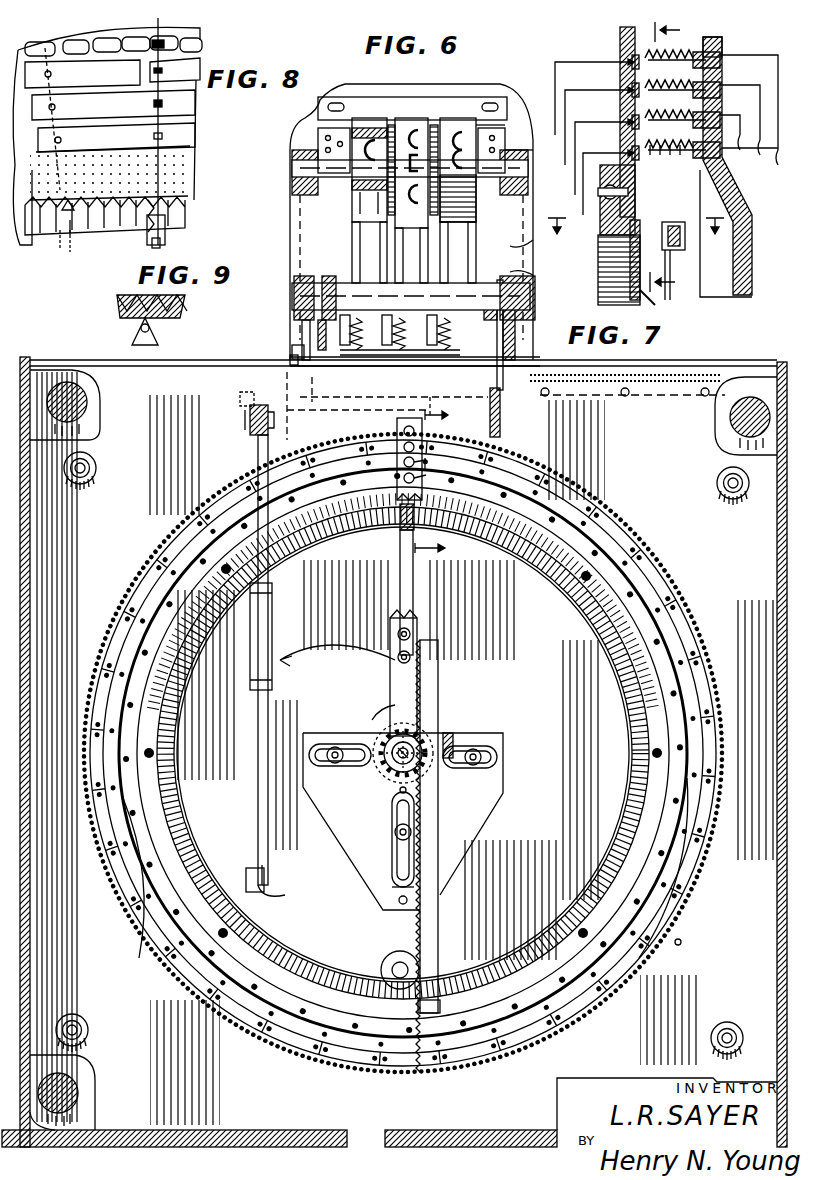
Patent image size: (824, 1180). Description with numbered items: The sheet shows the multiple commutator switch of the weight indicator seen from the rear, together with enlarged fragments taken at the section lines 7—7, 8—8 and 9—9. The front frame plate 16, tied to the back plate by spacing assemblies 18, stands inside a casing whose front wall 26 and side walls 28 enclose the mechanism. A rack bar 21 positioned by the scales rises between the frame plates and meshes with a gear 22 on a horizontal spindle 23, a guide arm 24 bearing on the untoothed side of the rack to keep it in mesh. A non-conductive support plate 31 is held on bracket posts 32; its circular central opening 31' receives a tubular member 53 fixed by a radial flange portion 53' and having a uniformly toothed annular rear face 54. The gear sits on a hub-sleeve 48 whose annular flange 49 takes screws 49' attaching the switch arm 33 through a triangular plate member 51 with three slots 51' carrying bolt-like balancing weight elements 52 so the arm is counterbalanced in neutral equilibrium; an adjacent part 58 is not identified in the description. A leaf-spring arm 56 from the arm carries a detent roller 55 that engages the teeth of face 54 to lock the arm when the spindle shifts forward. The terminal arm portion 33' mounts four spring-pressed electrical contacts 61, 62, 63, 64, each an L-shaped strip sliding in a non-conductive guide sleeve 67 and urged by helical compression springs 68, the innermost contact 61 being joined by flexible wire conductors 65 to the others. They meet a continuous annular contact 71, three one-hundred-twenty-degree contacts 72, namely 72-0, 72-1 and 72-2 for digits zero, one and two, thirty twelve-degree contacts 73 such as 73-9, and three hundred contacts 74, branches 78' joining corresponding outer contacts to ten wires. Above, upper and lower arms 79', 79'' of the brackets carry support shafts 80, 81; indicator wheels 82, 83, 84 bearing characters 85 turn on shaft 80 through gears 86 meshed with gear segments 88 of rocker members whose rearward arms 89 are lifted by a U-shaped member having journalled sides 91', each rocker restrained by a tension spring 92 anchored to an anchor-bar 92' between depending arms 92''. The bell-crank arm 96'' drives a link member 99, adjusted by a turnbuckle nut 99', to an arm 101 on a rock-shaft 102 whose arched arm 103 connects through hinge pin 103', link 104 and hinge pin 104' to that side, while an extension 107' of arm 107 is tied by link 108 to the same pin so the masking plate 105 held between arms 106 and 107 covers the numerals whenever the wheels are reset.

In FIG. 6, the front frame plate 16 is at (728, 395).
In FIG. 6, the spacing assemblies 18 is at (752, 405).
In FIG. 6, the rack bar 21 is at (438, 920).
In FIG. 6, the gear 22 is at (398, 776).
In FIG. 6, the spindle 23 is at (394, 766).
In FIG. 6, the guide arm 24 is at (462, 744).
In FIG. 6, the front wall 26 is at (92, 358).
In FIG. 6, the side walls 28 is at (30, 357).
In FIG. 6, the support plate 31 is at (403, 750).
In FIG. 7, the support plate 31 is at (612, 119).
In FIG. 8, the support plate 31 is at (118, 113).
In FIG. 6, the central opening 31' is at (403, 753).
In FIG. 8, the central opening 31' is at (127, 216).
In FIG. 6, the bracket posts 32 is at (718, 490).
In FIG. 6, the switch arm 33 is at (348, 673).
In FIG. 7, the switch arm 33 is at (741, 167).
In FIG. 7, the arm portion 33' is at (729, 37).
In FIG. 6, the hub-sleeve 48 is at (450, 738).
In FIG. 6, the annular flange 49 is at (384, 737).
In FIG. 6, the screws 49' is at (425, 727).
In FIG. 6, the plate member 51 is at (380, 847).
In FIG. 6, the slots 51' is at (425, 796).
In FIG. 6, the balancing weight elements 52 is at (330, 764).
In FIG. 6, the tubular member 53 is at (403, 604).
In FIG. 7, the tubular member 53 is at (598, 262).
In FIG. 8, the tubular member 53 is at (88, 233).
In FIG. 7, the radial flange portion 53' is at (591, 200).
In FIG. 8, the radial flange portion 53' is at (25, 215).
In FIG. 6, the toothed annular rear face 54 is at (186, 676).
In FIG. 7, the toothed annular rear face 54 is at (655, 305).
In FIG. 8, the toothed annular rear face 54 is at (186, 222).
In FIG. 6, the detent roller 55 is at (415, 518).
In FIG. 7, the detent roller 55 is at (678, 224).
In FIG. 8, the detent roller 55 is at (166, 240).
In FIG. 6, the leaf-spring arm 56 is at (414, 576).
In FIG. 7, the leaf-spring arm 56 is at (672, 300).
In FIG. 6, the arc 58 is at (388, 712).
In FIG. 6, the spring-pressed electrical contact 61 is at (406, 480).
In FIG. 7, the spring-pressed electrical contact 61 is at (650, 156).
In FIG. 8, the spring-pressed electrical contact 61 is at (165, 136).
In FIG. 6, the spring-pressed electrical contact 62 is at (404, 465).
In FIG. 7, the spring-pressed electrical contact 62 is at (656, 122).
In FIG. 8, the spring-pressed electrical contact 62 is at (165, 104).
In FIG. 7, the spring-pressed electrical contact 63 is at (656, 92).
In FIG. 8, the spring-pressed electrical contact 63 is at (165, 70).
In FIG. 6, the spring-pressed electrical contact 64 is at (400, 428).
In FIG. 7, the spring-pressed electrical contact 64 is at (656, 62).
In FIG. 8, the spring-pressed electrical contact 64 is at (160, 20).
In FIG. 6, the flexible wire conductors 65 is at (402, 436).
In FIG. 7, the flexible wire conductors 65 is at (778, 55).
In FIG. 7, the guide sleeve 67 is at (722, 70).
In FIG. 7, the helical compression springs 68 is at (682, 156).
In FIG. 6, the contact 71 is at (647, 617).
In FIG. 7, the contact 71 is at (624, 147).
In FIG. 8, the contact 71 is at (118, 140).
In FIG. 7, the contacts 72 is at (624, 116).
In FIG. 8, the contacts 72 is at (112, 108).
In FIG. 6, the ring strip segment 72-0 is at (165, 928).
In FIG. 6, the ring strip segment 72-1 is at (560, 500).
In FIG. 6, the ring strip segment 72-2 is at (688, 892).
In FIG. 7, the contacts 73 is at (624, 84).
In FIG. 8, the contacts 73 is at (106, 80).
In FIG. 6, the ring strip segment 73-9 is at (660, 578).
In FIG. 6, the contacts 74 is at (648, 546).
In FIG. 7, the contacts 74 is at (622, 56).
In FIG. 8, the contacts 74 is at (45, 48).
In FIG. 6, the branches 78' is at (695, 940).
In FIG. 6, the upper arms 79' is at (389, 171).
In FIG. 6, the lower arms 79'' is at (395, 288).
In FIG. 6, the support shaft 80 is at (292, 178).
In FIG. 6, the support shaft 81 is at (292, 297).
In FIG. 6, the indicator wheel 82 is at (360, 118).
In FIG. 6, the indicator wheel 83 is at (410, 118).
In FIG. 6, the indicator wheel 84 is at (462, 118).
In FIG. 6, the characters 85 is at (480, 122).
In FIG. 6, the gears 86 is at (392, 125).
In FIG. 6, the gear segments 88 is at (340, 248).
In FIG. 6, the arms 89 is at (389, 345).
In FIG. 6, the sides 91' is at (288, 333).
In FIG. 6, the tension spring 92 is at (400, 357).
In FIG. 6, the anchor-bar 92' is at (271, 353).
In FIG. 6, the arms 92'' is at (279, 342).
In FIG. 6, the arm 96'' is at (268, 909).
In FIG. 6, the link member 99 is at (238, 663).
In FIG. 6, the turnbuckle nut 99' is at (247, 636).
In FIG. 6, the arm 101 is at (250, 420).
In FIG. 6, the rock-shaft 102 is at (240, 402).
In FIG. 6, the arm 103 is at (525, 416).
In FIG. 6, the hinge pin 103' is at (506, 406).
In FIG. 6, the link 104 is at (487, 340).
In FIG. 6, the hinge pin 104' is at (507, 346).
In FIG. 6, the masking plate 105 is at (500, 110).
In FIG. 6, the arm 106 is at (320, 132).
In FIG. 6, the arm 107 is at (529, 127).
In FIG. 6, the extension 107' is at (544, 253).
In FIG. 6, the link 108 is at (534, 273).
In FIG. 6, the section line 7— 7 is at (438, 483).
In FIG. 7, the section line 8— 8 is at (672, 157).
In FIG. 7, the section line 9— 9 is at (636, 239).